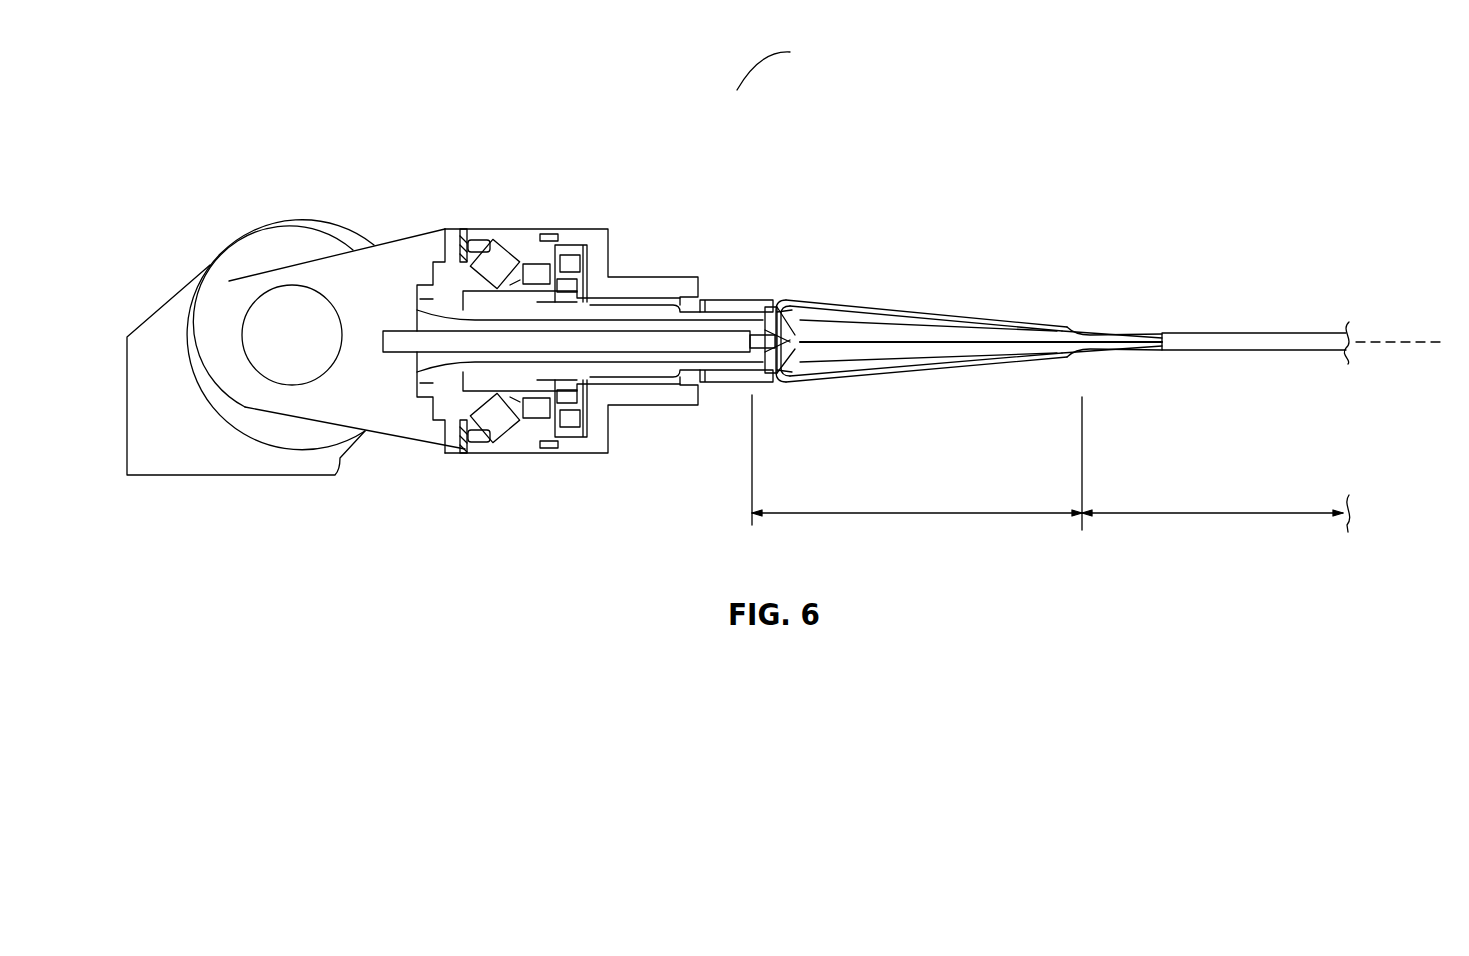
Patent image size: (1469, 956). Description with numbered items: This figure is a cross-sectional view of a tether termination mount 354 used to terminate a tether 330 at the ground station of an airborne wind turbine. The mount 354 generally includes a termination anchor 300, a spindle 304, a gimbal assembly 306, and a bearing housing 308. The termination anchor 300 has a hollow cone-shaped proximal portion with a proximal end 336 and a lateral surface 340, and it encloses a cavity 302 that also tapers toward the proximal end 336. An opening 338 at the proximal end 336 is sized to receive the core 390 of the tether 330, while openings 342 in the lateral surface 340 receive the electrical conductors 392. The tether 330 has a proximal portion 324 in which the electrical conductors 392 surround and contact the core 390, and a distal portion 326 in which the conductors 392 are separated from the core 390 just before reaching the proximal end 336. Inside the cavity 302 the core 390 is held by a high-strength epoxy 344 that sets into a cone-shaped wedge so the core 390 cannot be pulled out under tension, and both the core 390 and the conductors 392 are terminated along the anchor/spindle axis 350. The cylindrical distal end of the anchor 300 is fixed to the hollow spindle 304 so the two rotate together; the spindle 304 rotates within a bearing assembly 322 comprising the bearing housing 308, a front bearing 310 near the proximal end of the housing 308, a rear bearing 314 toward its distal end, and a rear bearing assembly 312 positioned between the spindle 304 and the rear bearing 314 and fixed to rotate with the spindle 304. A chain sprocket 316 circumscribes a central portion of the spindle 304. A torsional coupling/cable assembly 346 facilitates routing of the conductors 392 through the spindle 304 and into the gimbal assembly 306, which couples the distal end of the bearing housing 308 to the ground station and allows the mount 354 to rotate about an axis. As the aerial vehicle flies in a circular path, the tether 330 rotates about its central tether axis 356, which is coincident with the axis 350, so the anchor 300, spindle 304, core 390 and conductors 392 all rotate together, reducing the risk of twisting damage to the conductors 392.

The termination anchor 300 is at (928, 360).
The cavity 302 is at (792, 310).
The spindle 304 is at (625, 372).
The gimbal assembly 306 is at (242, 200).
The bearing housing 308 is at (598, 262).
The front bearing 310 is at (682, 297).
The rear bearing assembly 312 is at (468, 430).
The rear bearing 314 is at (498, 417).
The chain sprocket 316 is at (567, 417).
The bearing assembly 322 is at (514, 205).
The proximal portion of tether 324 is at (1217, 515).
The distal portion of tether 326 is at (905, 515).
The tether 330 is at (1272, 333).
The proximal end 336 is at (1082, 332).
The opening 338 is at (1080, 352).
The lateral surface 340 is at (827, 305).
The openings 342 is at (779, 308).
The epoxy 344 is at (825, 355).
The torsional coupling/cable assembly 346 is at (443, 339).
The axis 350 is at (752, 305).
The tether termination mount 354 is at (788, 64).
The central tether axis 356 is at (1400, 342).
The core 390 is at (907, 324).
The electrical conductors 392 is at (1002, 322).